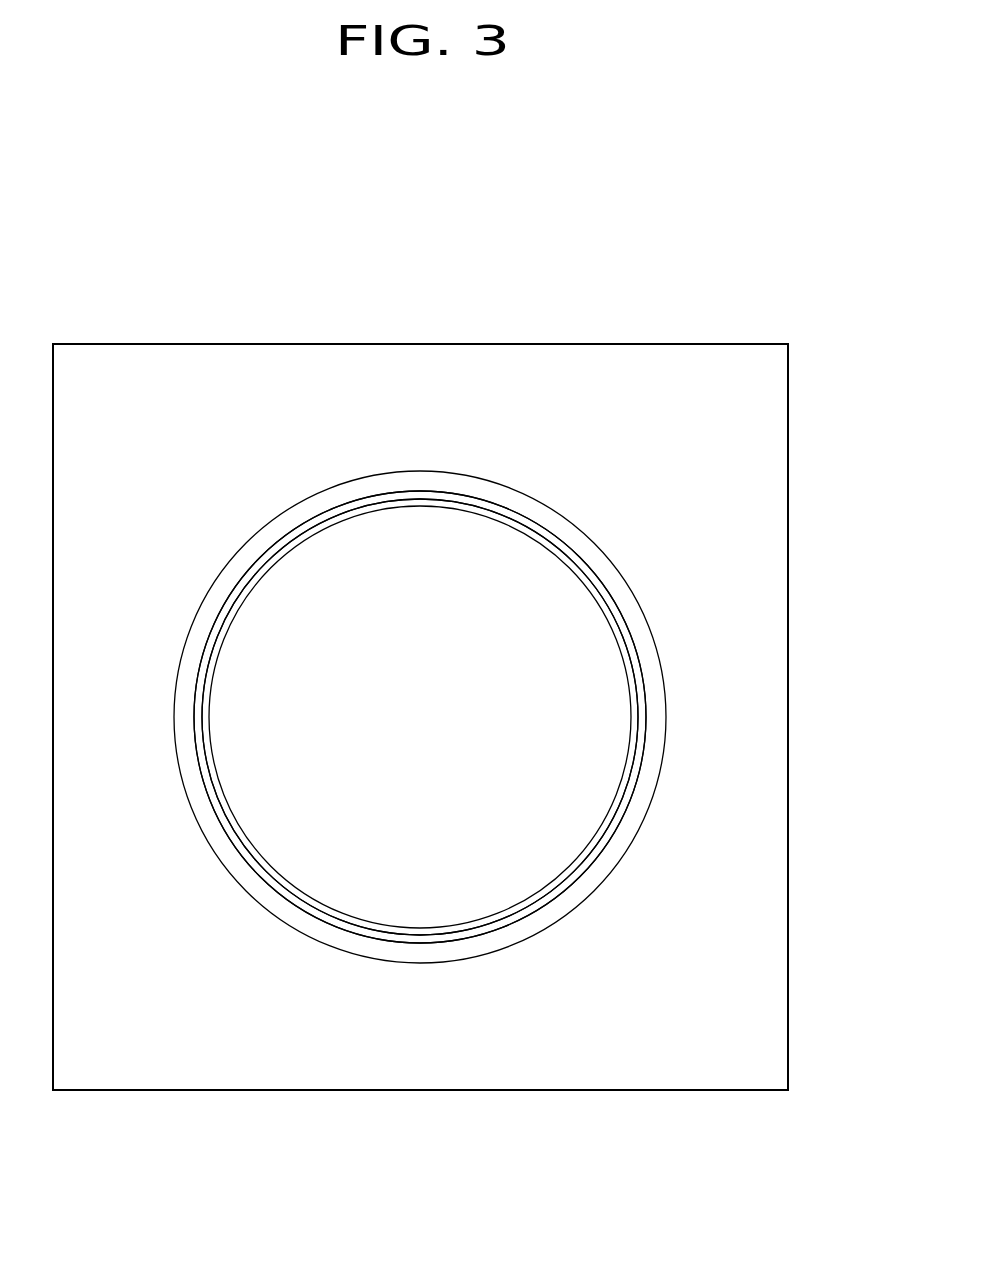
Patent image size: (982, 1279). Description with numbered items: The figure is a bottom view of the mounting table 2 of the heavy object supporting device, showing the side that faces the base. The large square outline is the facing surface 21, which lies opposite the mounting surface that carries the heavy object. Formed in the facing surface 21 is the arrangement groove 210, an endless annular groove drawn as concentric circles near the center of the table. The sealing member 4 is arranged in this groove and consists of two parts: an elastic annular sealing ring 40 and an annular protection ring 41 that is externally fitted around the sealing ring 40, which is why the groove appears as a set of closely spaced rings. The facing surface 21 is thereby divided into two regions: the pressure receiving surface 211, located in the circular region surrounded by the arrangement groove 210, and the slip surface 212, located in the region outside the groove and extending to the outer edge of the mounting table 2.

The mounting table 2 is at (689, 343).
The facing surface 21 is at (724, 463).
The arrangement groove 210 is at (320, 913).
The pressure receiving surface 211 is at (505, 858).
The slip surface 212 is at (683, 1032).
The sealing member 4 is at (842, 662).
The sealing ring 40 is at (643, 696).
The protection ring 41 is at (652, 748).